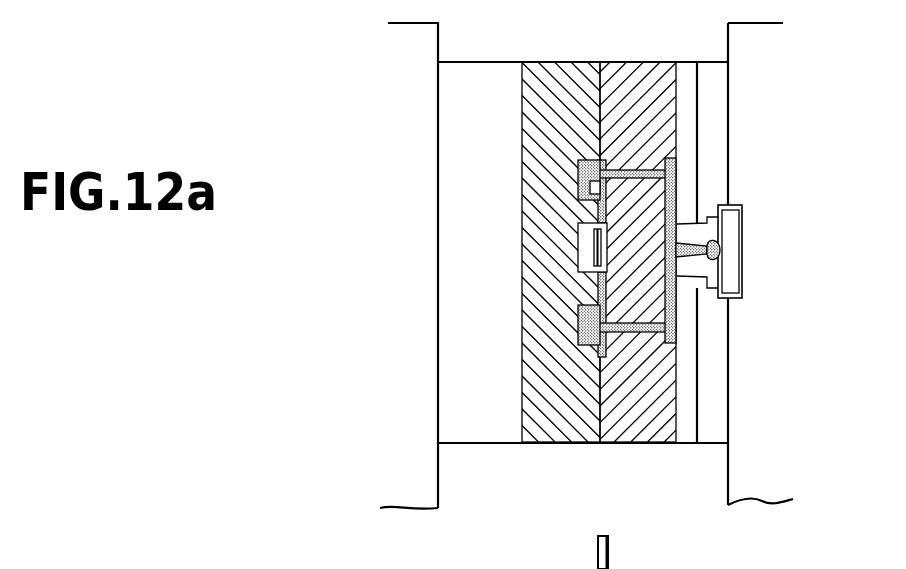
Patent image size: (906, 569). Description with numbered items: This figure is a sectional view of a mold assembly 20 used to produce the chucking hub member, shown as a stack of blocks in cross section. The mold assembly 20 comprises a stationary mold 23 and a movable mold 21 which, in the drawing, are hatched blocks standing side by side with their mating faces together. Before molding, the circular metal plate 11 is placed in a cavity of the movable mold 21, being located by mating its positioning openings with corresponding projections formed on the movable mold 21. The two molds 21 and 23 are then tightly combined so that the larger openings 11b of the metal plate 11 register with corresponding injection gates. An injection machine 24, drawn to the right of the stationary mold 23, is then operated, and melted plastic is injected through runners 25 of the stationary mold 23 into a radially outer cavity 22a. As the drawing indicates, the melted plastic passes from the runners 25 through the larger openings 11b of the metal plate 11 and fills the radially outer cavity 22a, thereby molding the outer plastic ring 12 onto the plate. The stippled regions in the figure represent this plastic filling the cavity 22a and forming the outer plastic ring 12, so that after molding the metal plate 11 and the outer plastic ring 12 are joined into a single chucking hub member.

The mold assembly 20 is at (518, 444).
The movable mold 21 is at (550, 80).
The radially outer cavity 22a is at (596, 158).
The stationary mold 23 is at (643, 65).
The runners 25 is at (663, 165).
The injection machine 24 is at (742, 222).
The larger openings 11b is at (579, 172).
The circular metal plate 11 is at (578, 263).
The outer plastic ring 12 is at (577, 318).